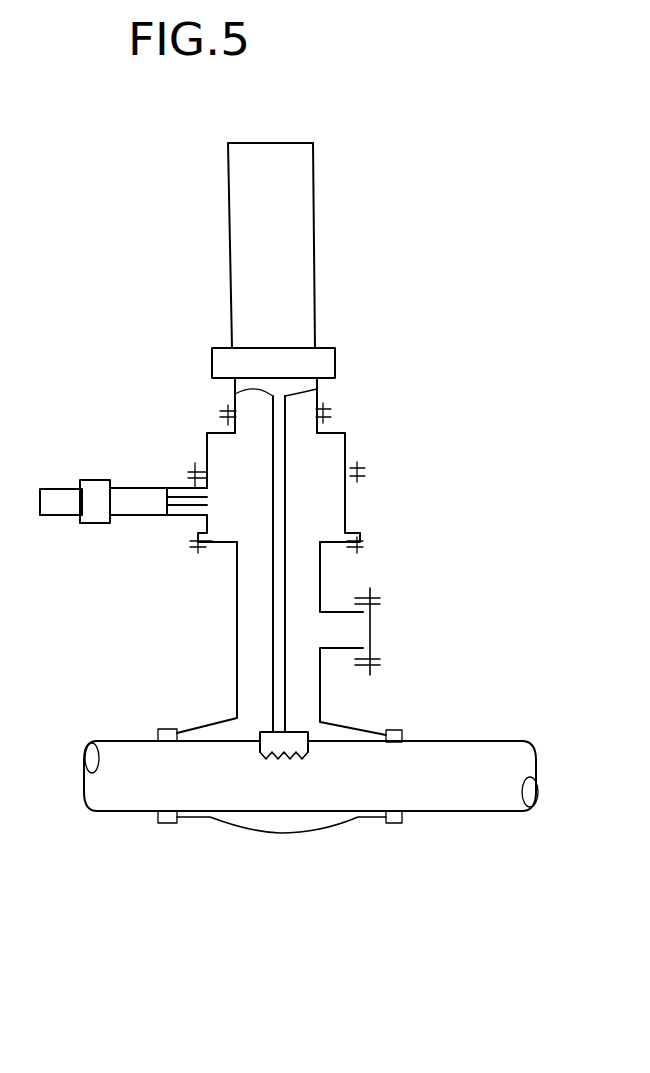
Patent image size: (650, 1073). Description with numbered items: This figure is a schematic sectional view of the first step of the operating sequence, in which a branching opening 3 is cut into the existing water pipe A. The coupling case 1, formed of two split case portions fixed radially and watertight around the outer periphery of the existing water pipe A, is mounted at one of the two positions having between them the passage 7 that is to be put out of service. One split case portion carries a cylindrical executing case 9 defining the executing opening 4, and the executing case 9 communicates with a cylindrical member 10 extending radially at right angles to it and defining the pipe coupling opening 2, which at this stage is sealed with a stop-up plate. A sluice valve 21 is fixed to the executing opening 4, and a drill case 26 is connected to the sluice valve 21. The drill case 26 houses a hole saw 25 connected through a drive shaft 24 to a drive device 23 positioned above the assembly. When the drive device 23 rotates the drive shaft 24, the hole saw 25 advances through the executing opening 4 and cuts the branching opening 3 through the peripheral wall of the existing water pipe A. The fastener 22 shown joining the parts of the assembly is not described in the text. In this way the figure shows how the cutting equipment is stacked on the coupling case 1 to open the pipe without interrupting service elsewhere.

The coupling case 1 is at (243, 832).
The pipe coupling opening 2 is at (362, 628).
The branching opening 3 is at (313, 745).
The executing opening 4 is at (258, 542).
The passage 7 is at (458, 762).
The executing case 9 is at (237, 640).
The cylindrical member 10 is at (337, 610).
The sluice valve 21 is at (132, 505).
The bolt 22 is at (373, 635).
The drive device 23 is at (303, 255).
The drive shaft 24 is at (278, 507).
The hole saw 25 is at (272, 732).
The drill case 26 is at (203, 447).
The existing water pipe A is at (470, 810).